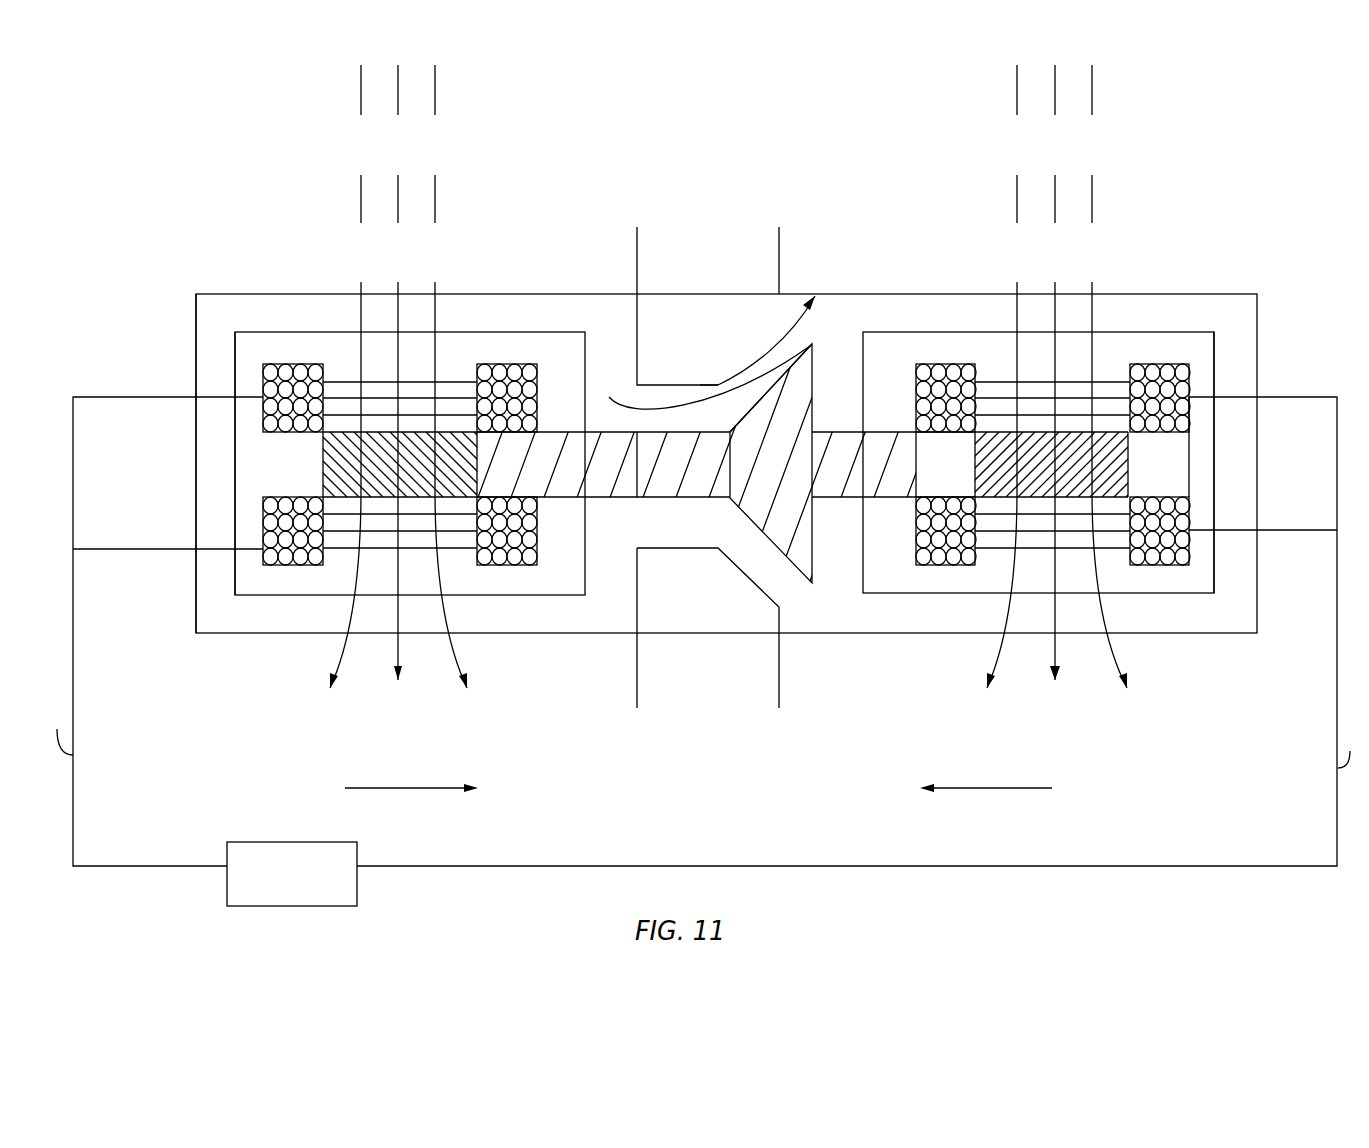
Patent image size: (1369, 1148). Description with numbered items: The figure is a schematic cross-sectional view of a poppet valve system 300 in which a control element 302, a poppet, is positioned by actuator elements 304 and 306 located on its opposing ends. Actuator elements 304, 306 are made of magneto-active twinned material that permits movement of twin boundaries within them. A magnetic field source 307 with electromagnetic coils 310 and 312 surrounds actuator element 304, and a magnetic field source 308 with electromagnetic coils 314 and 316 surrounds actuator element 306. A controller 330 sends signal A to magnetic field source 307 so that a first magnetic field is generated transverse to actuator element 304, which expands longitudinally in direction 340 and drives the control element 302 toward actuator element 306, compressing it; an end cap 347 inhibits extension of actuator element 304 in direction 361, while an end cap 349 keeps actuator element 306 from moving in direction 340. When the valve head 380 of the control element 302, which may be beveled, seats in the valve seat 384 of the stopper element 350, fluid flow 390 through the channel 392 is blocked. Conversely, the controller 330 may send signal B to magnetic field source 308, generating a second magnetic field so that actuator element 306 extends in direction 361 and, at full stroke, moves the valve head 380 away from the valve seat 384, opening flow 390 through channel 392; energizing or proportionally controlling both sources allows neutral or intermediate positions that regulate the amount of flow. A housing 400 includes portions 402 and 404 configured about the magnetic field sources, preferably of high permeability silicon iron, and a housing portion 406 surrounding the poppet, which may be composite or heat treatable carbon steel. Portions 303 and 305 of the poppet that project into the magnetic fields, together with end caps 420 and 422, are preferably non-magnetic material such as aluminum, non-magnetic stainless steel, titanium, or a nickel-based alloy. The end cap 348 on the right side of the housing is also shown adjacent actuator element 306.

The poppet valve system 300 is at (837, 133).
The control element 302 is at (800, 544).
The portion of poppet 303 is at (493, 447).
The actuator element 304 is at (330, 482).
The portion of poppet 305 is at (865, 447).
The actuator element 306 is at (1073, 468).
The magnetic field source 307 is at (428, 334).
The magnetic field source 308 is at (1030, 333).
The electromagnetic coil 310 is at (272, 375).
The electromagnetic coil 312 is at (264, 563).
The electromagnetic coil 314 is at (937, 372).
The electromagnetic coil 316 is at (950, 557).
The controller 330 is at (292, 874).
The direction 340 is at (411, 772).
The end cap 347 is at (253, 447).
The housing wall 348 is at (1215, 495).
The end cap 349 is at (1200, 418).
The stopper element 350 is at (686, 262).
The direction 361 is at (986, 772).
The valve head 380 is at (800, 366).
The valve seat 384 is at (724, 371).
The fluid flow 390 is at (703, 377).
The channel 392 is at (780, 340).
The housing 400 is at (1228, 294).
The housing portion 402 is at (270, 282).
The housing portion 404 is at (1137, 288).
The housing portion 406 is at (608, 272).
The end cap 420 is at (1236, 413).
The end cap 422 is at (210, 473).